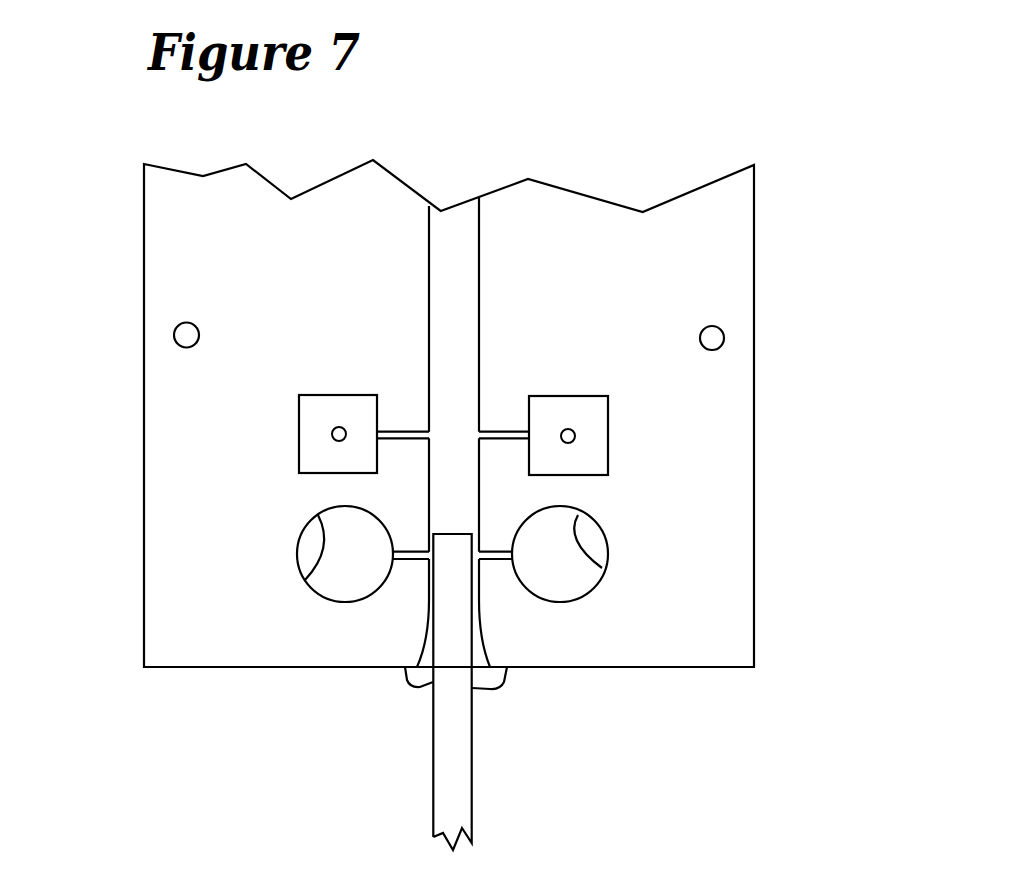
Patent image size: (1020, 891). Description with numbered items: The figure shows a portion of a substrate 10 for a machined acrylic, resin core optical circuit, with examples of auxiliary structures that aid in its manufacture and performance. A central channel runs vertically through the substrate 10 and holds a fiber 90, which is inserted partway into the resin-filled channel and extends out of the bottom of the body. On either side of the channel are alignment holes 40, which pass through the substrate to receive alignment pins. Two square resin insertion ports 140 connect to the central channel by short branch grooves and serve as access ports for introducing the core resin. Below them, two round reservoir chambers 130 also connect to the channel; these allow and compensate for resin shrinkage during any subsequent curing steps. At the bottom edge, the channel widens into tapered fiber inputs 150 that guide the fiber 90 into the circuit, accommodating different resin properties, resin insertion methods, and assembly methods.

The substrate 10 is at (177, 576).
The alignment holes 40 is at (712, 338).
The fibers 90 is at (462, 690).
The reservoir chambers 130 is at (588, 538).
The resin insertion ports 140 is at (597, 438).
The tapered fiber inputs 150 is at (480, 640).